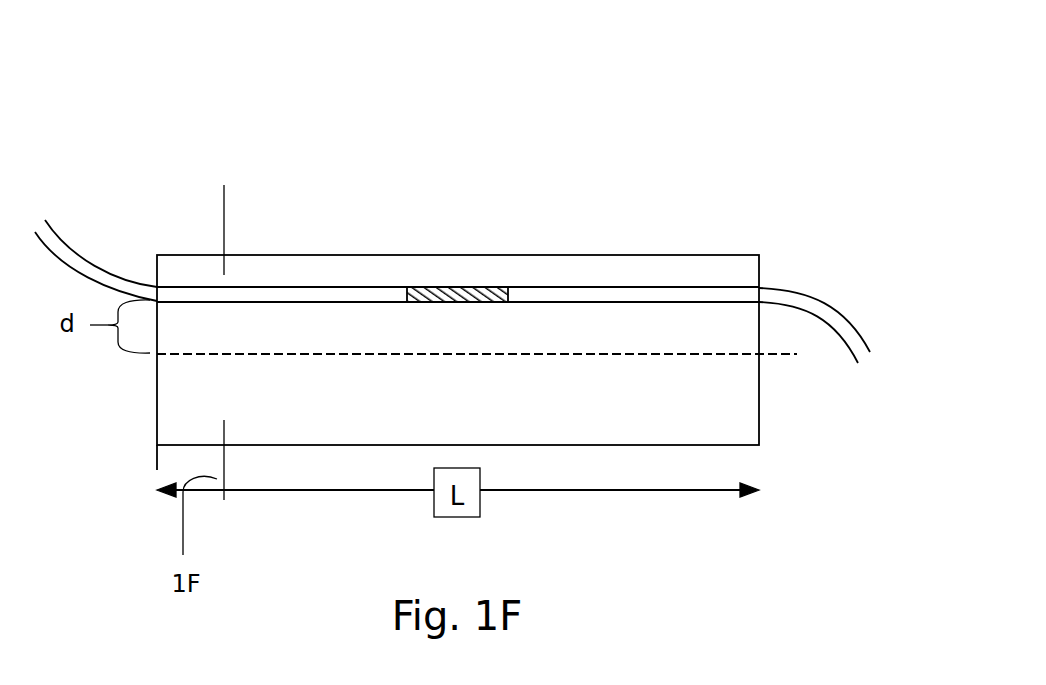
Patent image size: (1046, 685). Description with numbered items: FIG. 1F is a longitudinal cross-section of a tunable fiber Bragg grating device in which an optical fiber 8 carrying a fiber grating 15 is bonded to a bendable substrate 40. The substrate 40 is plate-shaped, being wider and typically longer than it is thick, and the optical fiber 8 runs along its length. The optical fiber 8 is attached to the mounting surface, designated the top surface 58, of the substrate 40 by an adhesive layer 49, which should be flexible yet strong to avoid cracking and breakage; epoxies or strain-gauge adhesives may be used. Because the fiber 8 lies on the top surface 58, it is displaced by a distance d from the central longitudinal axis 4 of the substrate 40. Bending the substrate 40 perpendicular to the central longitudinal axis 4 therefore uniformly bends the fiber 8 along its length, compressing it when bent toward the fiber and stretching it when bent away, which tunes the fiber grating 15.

The substrate 40 is at (721, 157).
The adhesive layer 49 is at (614, 277).
The top surface 58 is at (302, 298).
The fiber grating 15 is at (460, 300).
The central longitudinal axis 4 is at (768, 357).
The optical fiber 8 is at (102, 288).